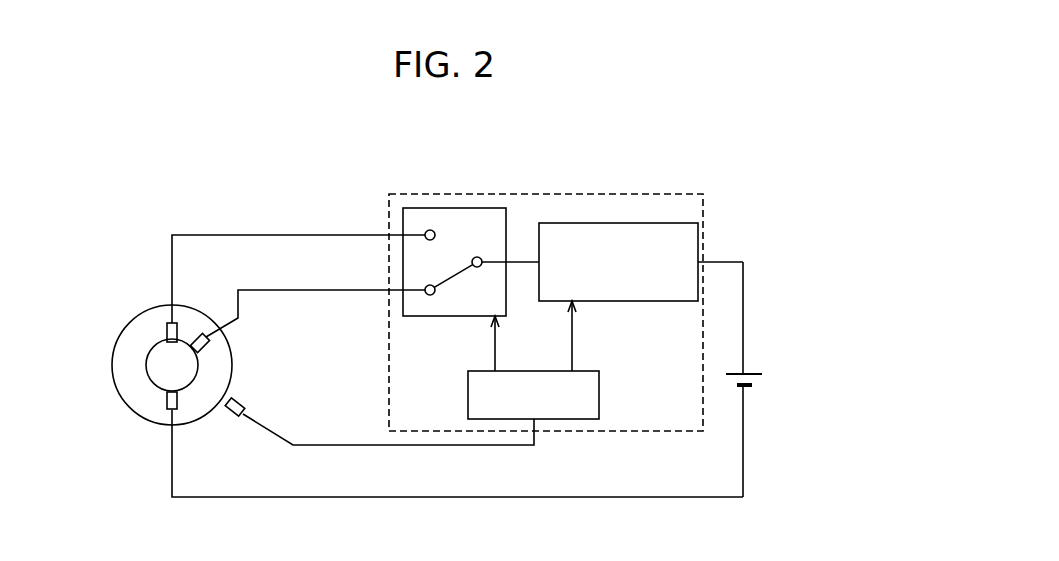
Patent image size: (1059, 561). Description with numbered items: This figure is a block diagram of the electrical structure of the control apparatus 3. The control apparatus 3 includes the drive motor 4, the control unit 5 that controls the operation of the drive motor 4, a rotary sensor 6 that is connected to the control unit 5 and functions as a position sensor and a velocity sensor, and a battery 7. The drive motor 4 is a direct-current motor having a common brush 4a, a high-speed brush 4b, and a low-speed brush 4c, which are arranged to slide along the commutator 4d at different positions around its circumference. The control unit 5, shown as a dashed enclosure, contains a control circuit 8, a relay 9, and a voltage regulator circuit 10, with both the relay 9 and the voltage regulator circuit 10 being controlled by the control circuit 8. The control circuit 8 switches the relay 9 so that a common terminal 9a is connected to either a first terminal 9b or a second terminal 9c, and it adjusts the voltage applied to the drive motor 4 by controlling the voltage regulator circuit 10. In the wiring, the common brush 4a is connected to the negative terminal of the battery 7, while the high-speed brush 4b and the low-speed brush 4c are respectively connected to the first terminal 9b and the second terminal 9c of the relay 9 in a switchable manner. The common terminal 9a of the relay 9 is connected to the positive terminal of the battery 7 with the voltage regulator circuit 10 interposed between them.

The control apparatus 3 is at (347, 212).
The drive motor 4 is at (176, 365).
The common brush 4a is at (177, 400).
The high-speed brush 4b is at (177, 331).
The low-speed brush 4c is at (208, 347).
The commutator 4d is at (147, 374).
The control unit 5 is at (592, 194).
The rotary sensor 6 is at (247, 396).
The battery 7 is at (758, 372).
The control circuit 8 is at (599, 393).
The relay 9 is at (469, 255).
The common terminal 9a is at (477, 257).
The first terminal 9b is at (430, 230).
The second terminal 9c is at (430, 295).
The voltage regulator circuit 10 is at (622, 301).